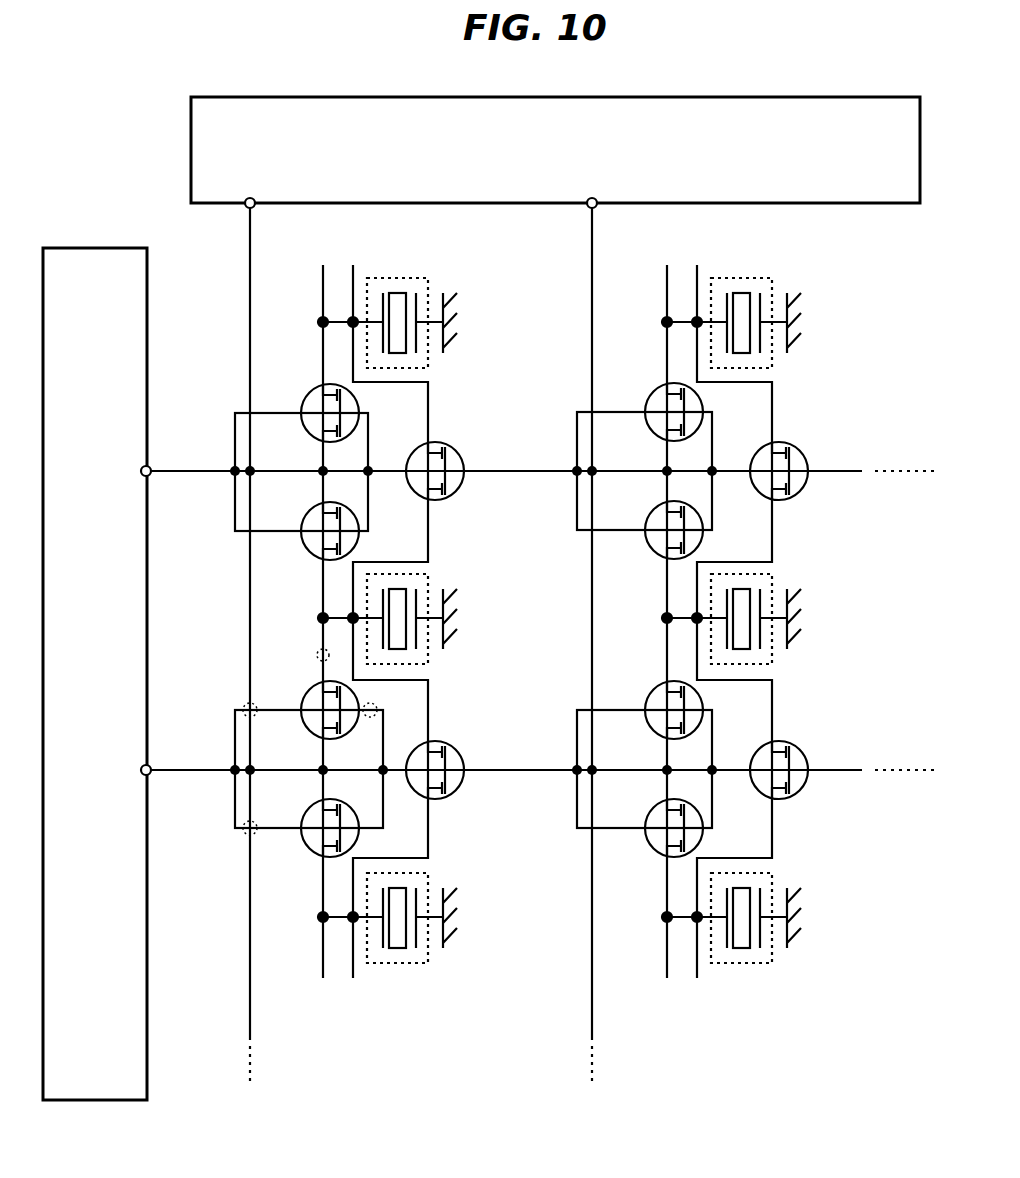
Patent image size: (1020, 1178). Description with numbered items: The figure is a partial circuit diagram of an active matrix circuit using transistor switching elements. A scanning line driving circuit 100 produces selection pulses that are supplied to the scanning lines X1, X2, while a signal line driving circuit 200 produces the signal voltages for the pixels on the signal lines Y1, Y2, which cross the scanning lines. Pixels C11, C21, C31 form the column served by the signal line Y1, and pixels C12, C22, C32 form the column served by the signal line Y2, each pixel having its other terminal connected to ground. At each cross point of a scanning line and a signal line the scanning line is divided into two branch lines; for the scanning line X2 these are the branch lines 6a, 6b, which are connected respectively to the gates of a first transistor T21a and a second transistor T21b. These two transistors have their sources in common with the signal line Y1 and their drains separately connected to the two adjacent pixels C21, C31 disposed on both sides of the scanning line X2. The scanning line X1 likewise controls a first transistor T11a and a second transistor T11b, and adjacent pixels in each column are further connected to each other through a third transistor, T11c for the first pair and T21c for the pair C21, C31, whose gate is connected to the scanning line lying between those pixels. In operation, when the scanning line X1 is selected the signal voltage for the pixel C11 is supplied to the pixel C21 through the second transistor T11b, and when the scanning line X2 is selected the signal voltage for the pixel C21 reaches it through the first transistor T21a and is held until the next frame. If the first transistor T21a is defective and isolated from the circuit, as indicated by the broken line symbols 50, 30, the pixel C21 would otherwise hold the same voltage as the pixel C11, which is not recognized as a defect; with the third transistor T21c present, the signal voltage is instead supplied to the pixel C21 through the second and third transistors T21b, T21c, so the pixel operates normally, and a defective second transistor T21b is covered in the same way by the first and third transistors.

The scanning line driving circuit 100 is at (98, 248).
The signal line driving circuit 200 is at (191, 170).
The signal line Y1 is at (250, 262).
The signal line Y2 is at (592, 275).
The scanning line X1 is at (218, 473).
The scanning line X2 is at (218, 772).
The pixel C11 is at (402, 279).
The pixel C12 is at (737, 278).
The pixel C21 is at (428, 572).
The pixel C22 is at (771, 578).
The pixel C31 is at (428, 873).
The pixel C32 is at (772, 873).
The first transistor T11a is at (303, 402).
The second transistor T11b is at (305, 550).
The third transistor T11c is at (456, 452).
The first transistor T21a is at (303, 700).
The second transistor T21b is at (308, 852).
The third transistor T21c is at (458, 747).
The broken line symbol 30 is at (320, 650).
The broken line symbol 50 is at (376, 712).
The branch line 6a is at (245, 706).
The branch line 6b is at (247, 834).